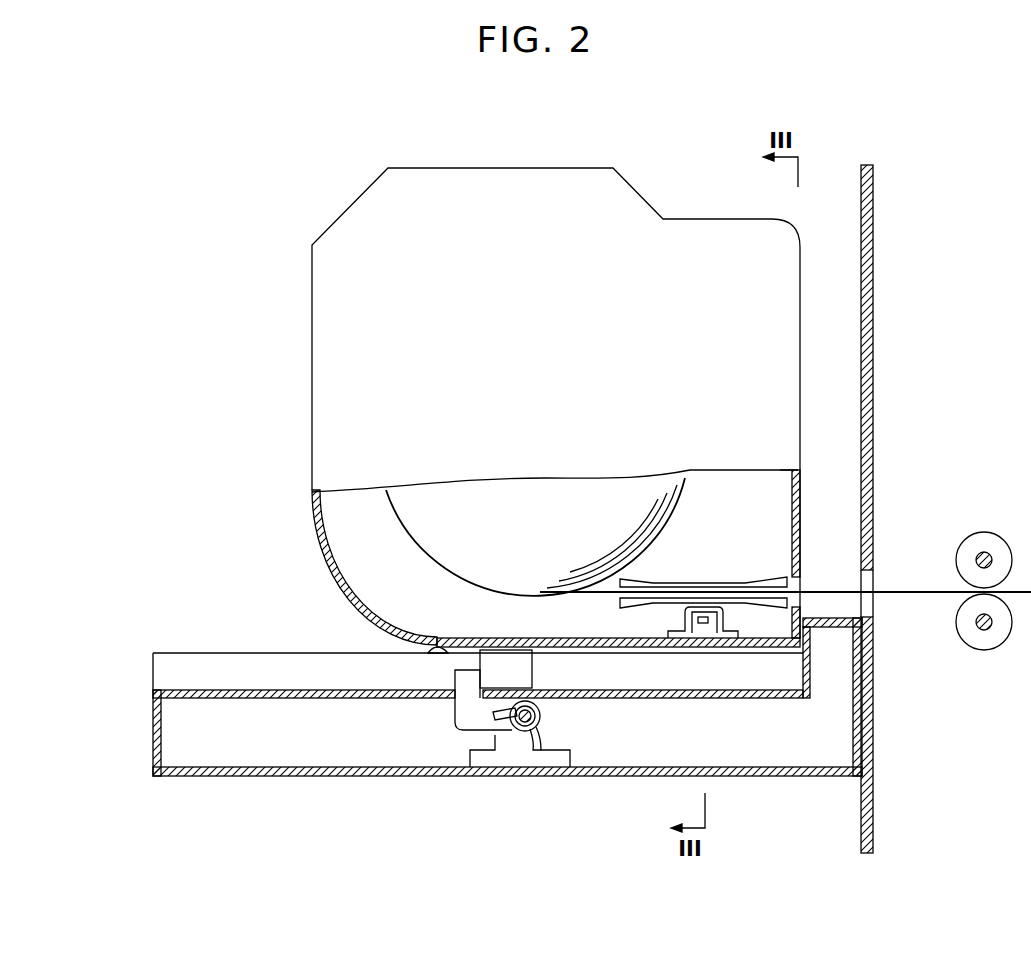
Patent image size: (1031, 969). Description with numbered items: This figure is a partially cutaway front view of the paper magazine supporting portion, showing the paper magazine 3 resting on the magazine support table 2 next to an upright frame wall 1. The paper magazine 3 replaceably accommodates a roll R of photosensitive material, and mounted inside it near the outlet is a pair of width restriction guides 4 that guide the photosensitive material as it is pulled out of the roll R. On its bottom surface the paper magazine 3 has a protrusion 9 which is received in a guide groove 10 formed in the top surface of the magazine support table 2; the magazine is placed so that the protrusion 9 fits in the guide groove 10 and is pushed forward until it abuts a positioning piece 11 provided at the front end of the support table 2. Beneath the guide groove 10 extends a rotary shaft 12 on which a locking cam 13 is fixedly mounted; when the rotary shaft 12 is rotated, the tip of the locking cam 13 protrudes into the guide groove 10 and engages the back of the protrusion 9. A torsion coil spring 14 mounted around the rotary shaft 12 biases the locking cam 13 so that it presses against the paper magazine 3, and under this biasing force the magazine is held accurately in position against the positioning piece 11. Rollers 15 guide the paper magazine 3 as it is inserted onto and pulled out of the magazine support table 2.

The frame side plate 1 is at (873, 210).
The magazine support table 2 is at (155, 740).
The paper magazine 3 is at (365, 192).
The width restriction guides 4 is at (713, 577).
The protrusion 9 is at (500, 658).
The guide groove 10 is at (380, 676).
The positioning piece 11 is at (778, 628).
The rotary shaft 12 is at (514, 727).
The locking cam 13 is at (470, 706).
The torsion coil spring 14 is at (547, 702).
The rollers 15 is at (432, 640).
The roll R is at (543, 497).